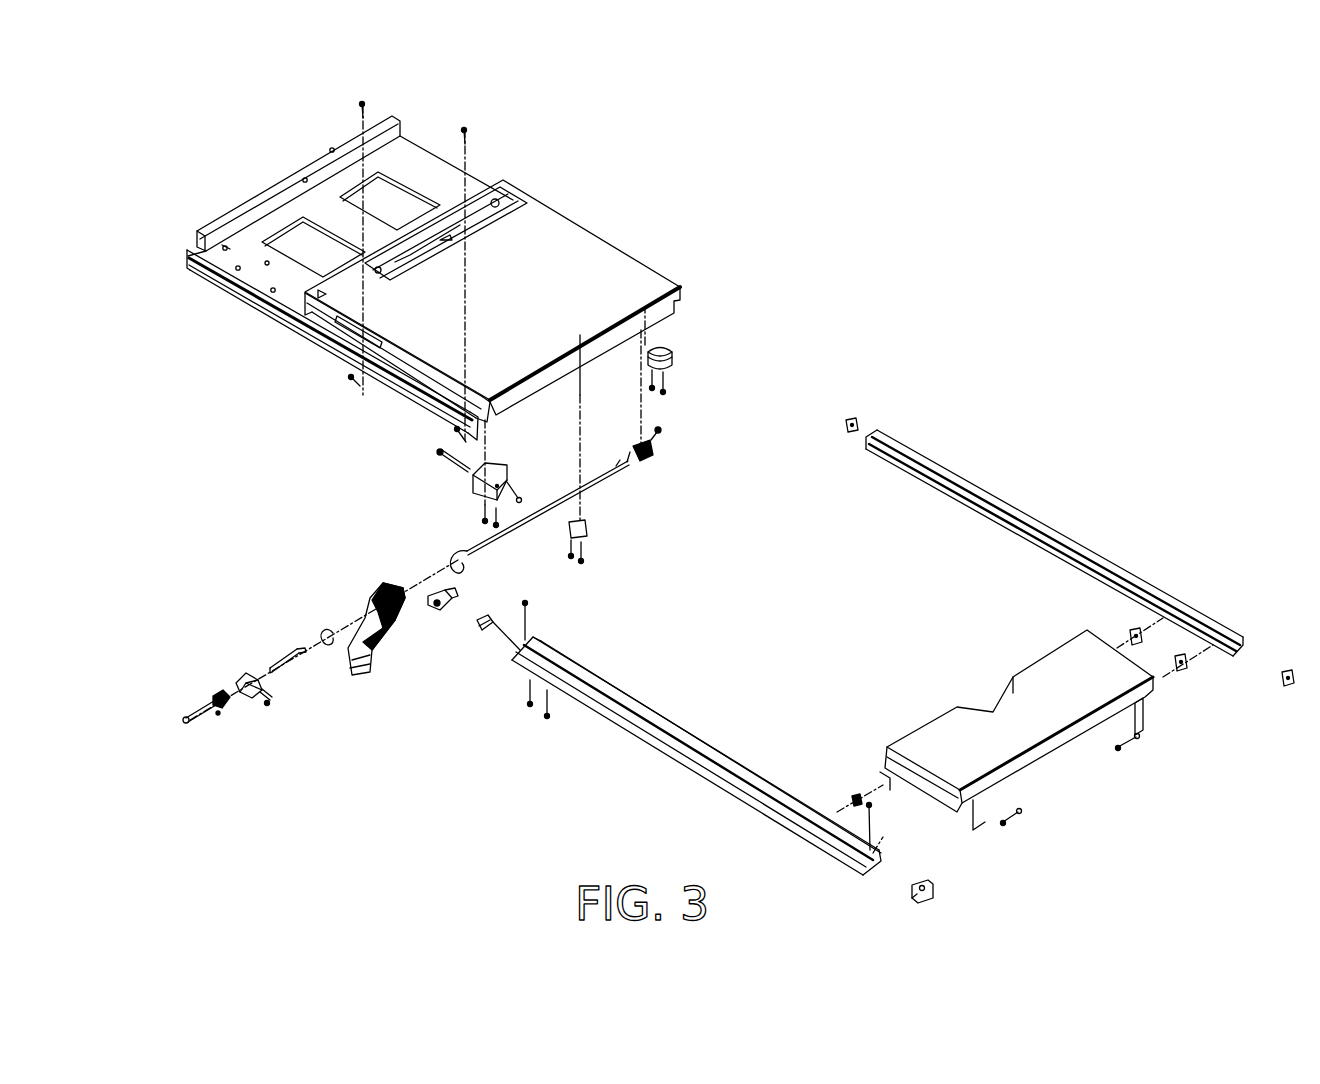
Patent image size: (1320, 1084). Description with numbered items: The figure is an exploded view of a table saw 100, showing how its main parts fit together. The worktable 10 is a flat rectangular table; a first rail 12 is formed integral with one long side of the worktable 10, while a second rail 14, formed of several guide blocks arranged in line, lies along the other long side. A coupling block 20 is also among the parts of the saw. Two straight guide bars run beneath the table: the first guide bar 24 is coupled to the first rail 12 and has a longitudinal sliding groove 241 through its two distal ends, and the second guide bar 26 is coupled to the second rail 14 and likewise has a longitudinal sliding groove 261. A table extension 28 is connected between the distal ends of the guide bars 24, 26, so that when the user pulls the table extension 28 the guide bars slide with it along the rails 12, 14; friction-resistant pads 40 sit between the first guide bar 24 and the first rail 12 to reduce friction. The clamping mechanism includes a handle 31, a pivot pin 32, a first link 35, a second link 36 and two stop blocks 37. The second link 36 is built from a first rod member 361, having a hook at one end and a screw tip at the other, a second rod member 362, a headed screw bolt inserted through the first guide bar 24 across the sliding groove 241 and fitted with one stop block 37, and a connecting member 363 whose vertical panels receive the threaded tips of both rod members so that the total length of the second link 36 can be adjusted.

The worktable 10 is at (624, 252).
The first rail 12 is at (300, 330).
The second rail 14 is at (673, 360).
The coupling block 20 is at (510, 476).
The first guide bar 24 is at (714, 775).
The longitudinal sliding groove 241 is at (879, 854).
The second guide bar 26 is at (1044, 537).
The longitudinal sliding groove 261 is at (957, 496).
The table extension 28 is at (1057, 743).
The handle 31 is at (370, 640).
The pivot pin 32 is at (447, 465).
The first link 35 is at (536, 517).
The second link 36 is at (276, 572).
The first rod member 361 is at (306, 647).
The second rod member 362 is at (192, 707).
The connecting member 363 is at (250, 673).
The stop block 37 is at (645, 458).
The friction-resistant pad 40 is at (366, 105).
The table saw 100 is at (931, 353).